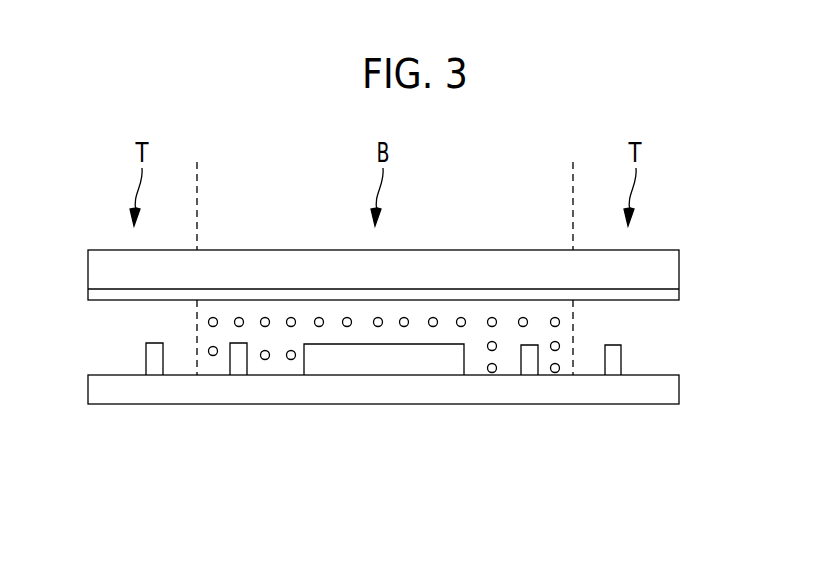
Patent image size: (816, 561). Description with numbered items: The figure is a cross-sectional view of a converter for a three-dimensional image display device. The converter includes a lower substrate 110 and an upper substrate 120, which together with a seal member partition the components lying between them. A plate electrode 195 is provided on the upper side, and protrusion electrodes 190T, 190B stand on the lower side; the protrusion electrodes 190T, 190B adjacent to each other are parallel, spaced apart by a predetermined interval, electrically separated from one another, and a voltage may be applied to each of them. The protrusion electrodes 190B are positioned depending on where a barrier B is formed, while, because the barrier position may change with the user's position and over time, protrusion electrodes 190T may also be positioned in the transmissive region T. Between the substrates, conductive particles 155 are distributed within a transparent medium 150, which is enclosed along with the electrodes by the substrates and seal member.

The lower substrate 110 is at (401, 392).
The upper substrate 120 is at (668, 272).
The plate electrode 195 is at (675, 295).
The transparent medium 150 is at (278, 368).
The conductive particles 155 is at (264, 360).
The protrusion electrode 190T is at (154, 364).
The protrusion electrode 190B is at (236, 364).